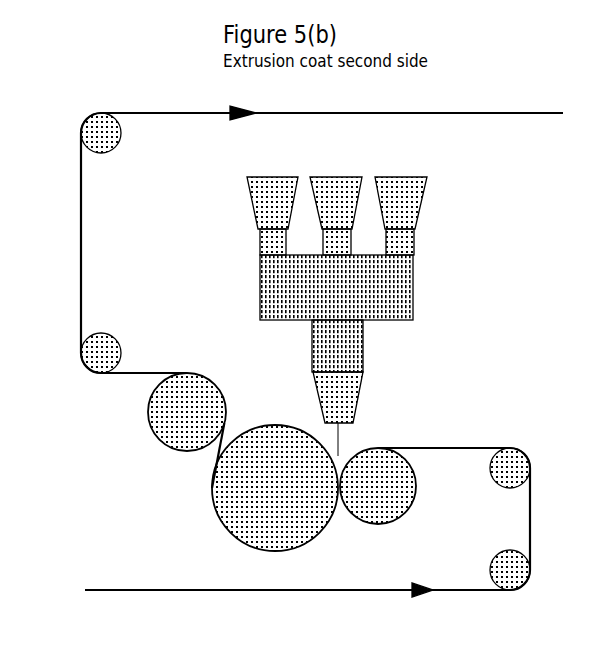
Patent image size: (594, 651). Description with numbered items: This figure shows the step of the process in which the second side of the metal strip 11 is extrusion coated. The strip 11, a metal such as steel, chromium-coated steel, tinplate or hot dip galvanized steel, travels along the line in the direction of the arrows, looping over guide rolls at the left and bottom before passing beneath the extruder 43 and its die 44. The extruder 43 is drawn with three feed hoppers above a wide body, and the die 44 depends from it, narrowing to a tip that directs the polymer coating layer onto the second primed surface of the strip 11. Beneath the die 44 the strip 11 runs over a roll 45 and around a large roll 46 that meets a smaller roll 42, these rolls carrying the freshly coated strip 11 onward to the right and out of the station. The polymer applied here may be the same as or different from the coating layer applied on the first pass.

The strip 11 is at (412, 113).
The chill roller 42 is at (407, 447).
The extruder 43 is at (413, 280).
The die 44 is at (363, 371).
The guide roller 45 is at (147, 425).
The backing roller 46 is at (223, 525).